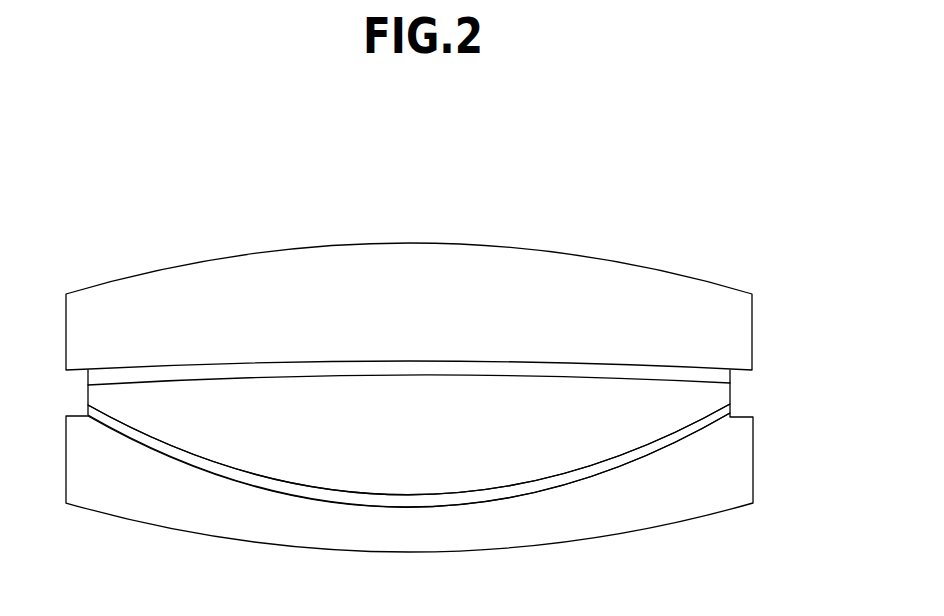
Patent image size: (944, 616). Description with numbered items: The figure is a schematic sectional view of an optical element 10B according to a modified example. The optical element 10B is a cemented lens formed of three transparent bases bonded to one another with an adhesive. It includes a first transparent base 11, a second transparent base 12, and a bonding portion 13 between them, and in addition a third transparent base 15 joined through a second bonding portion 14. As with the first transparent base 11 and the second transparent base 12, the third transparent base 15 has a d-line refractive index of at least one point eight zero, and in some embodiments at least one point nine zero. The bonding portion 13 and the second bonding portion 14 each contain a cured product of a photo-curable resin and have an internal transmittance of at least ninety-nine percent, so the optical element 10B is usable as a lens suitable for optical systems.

The optical element 10B is at (450, 155).
The first transparent base 11 is at (720, 472).
The second transparent base 12 is at (713, 400).
The bonding portion 13 is at (733, 409).
The second bonding portion 14 is at (702, 378).
The third transparent base 15 is at (655, 302).